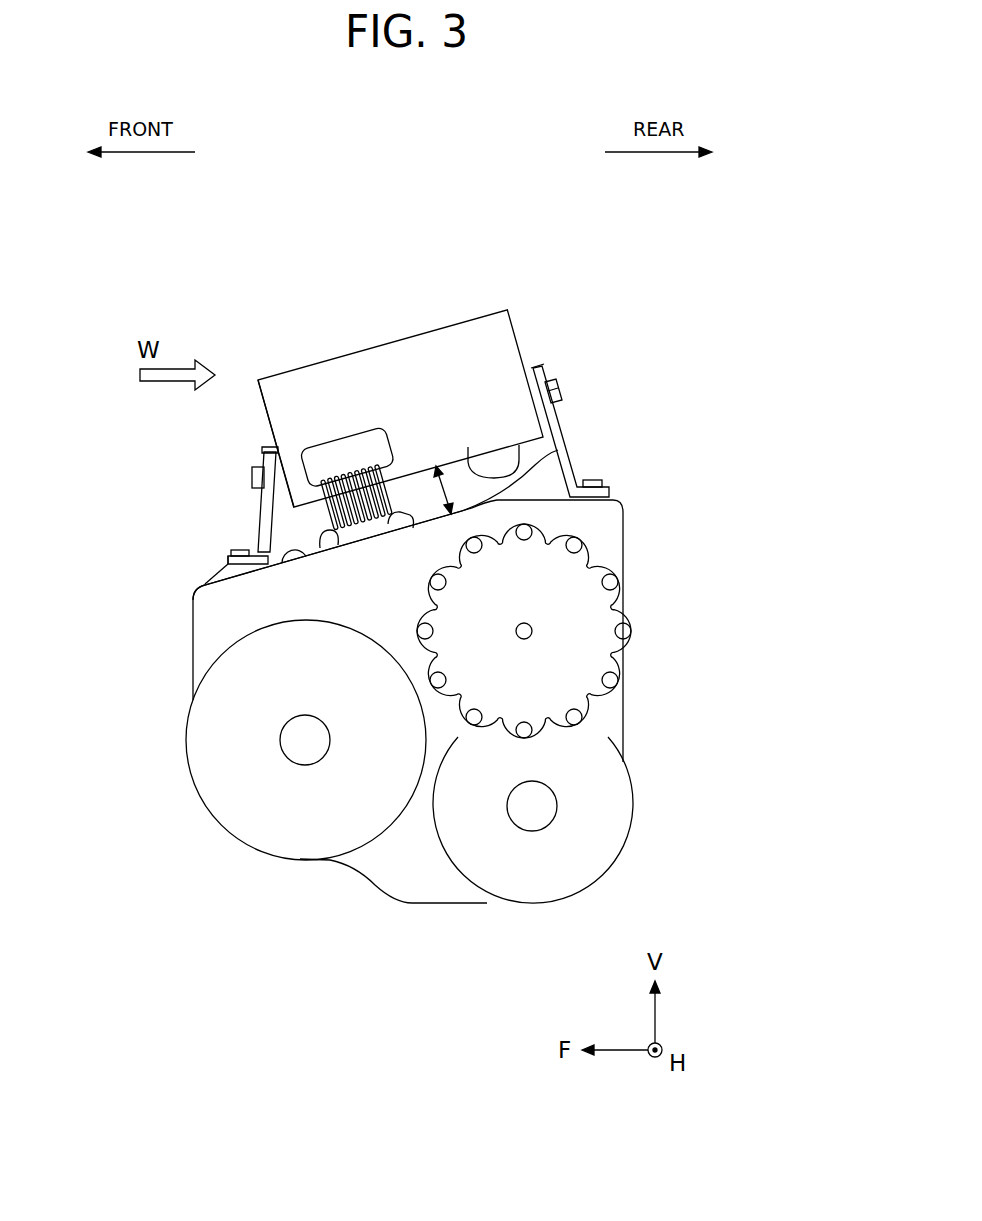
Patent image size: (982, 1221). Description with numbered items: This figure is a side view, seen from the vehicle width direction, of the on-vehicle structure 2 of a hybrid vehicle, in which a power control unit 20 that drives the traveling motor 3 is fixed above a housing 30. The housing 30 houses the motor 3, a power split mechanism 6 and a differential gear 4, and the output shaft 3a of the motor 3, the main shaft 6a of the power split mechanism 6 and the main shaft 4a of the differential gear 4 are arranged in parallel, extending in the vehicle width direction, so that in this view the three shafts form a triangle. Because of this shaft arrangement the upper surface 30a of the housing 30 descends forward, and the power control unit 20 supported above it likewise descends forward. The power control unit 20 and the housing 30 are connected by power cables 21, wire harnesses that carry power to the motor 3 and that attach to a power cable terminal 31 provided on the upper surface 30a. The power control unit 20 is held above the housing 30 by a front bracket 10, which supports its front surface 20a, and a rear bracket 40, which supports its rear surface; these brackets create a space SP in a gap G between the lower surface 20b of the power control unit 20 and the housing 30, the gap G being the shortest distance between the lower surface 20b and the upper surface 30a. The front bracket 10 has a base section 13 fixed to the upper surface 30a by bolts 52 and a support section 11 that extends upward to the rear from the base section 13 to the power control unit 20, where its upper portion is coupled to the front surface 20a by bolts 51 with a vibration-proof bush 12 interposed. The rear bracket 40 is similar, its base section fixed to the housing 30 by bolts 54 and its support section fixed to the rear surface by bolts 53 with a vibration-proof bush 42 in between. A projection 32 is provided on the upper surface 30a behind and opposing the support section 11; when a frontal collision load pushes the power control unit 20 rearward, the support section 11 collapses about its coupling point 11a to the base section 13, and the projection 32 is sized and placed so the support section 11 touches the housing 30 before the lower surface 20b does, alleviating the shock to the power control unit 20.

The on-vehicle structure 2 is at (141, 306).
The traveling motor 3 is at (232, 820).
The output shaft 3a is at (302, 747).
The differential gear 4 is at (615, 808).
The main shaft 4a is at (540, 807).
The power split mechanism 6 is at (603, 664).
The main shaft 6a is at (536, 626).
The front bracket 10 is at (260, 437).
The support section 11 is at (258, 545).
The coupling point 11a is at (265, 573).
The vibration-proof bush 12 is at (266, 500).
The base section 13 is at (214, 573).
The power control unit 20 is at (327, 358).
The front surface 20a is at (262, 410).
The lower surface 20b is at (515, 468).
The power cable 21 is at (401, 493).
The housing 30 is at (200, 662).
The upper surface 30a is at (212, 578).
The power cable terminal 31 is at (515, 466).
The projection 32 is at (292, 575).
The rear bracket 40 is at (545, 360).
The vibration-proof bush 42 is at (537, 362).
The bolts 51 is at (252, 476).
The bolts 52 is at (236, 552).
The bolts 53 is at (563, 385).
The bolts 54 is at (603, 482).
The space SP is at (414, 486).
The gap G is at (440, 470).